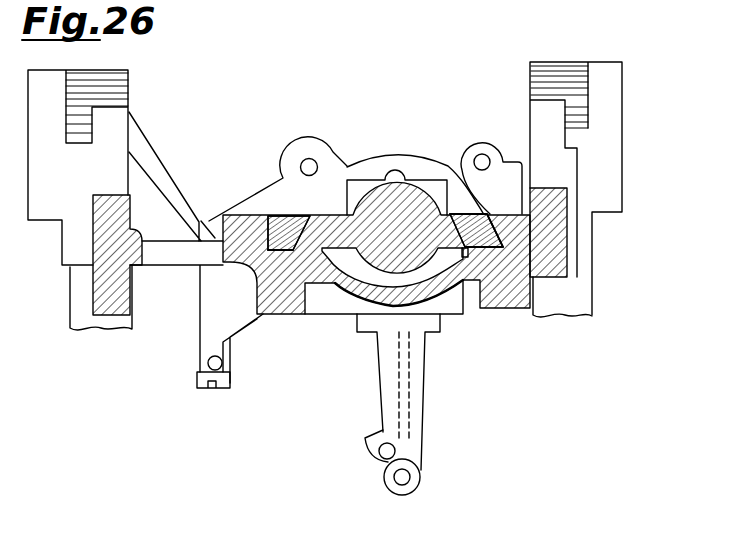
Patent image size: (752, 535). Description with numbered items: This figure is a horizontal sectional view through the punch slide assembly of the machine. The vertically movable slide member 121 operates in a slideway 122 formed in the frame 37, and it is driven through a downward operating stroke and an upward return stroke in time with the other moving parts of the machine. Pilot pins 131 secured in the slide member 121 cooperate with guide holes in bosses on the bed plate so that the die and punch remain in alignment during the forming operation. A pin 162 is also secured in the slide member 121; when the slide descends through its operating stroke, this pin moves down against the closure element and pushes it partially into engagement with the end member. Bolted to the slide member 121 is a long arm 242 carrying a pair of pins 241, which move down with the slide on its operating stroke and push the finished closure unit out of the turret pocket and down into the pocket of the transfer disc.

The frame 37 is at (77, 227).
The slide member 121 is at (318, 230).
The slideway 122 is at (301, 233).
The pilot pins 131 is at (310, 159).
The pin 162 is at (208, 362).
The pins 241 is at (400, 480).
The long arm 242 is at (415, 377).